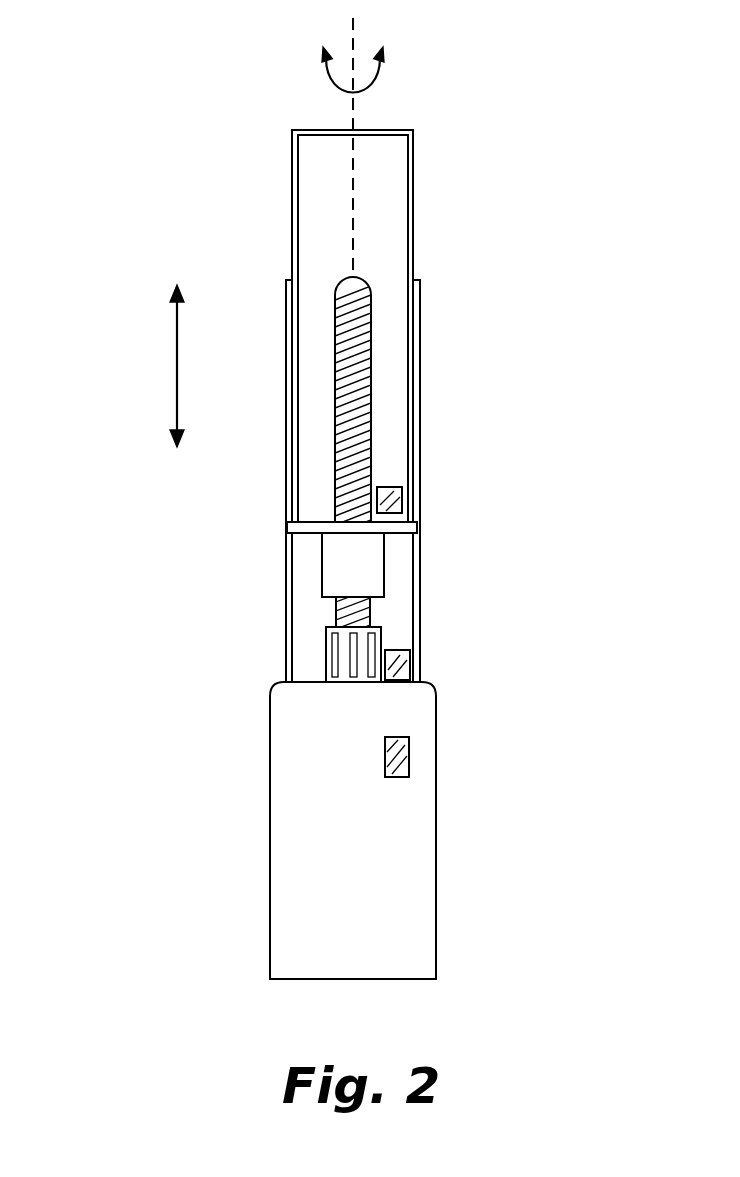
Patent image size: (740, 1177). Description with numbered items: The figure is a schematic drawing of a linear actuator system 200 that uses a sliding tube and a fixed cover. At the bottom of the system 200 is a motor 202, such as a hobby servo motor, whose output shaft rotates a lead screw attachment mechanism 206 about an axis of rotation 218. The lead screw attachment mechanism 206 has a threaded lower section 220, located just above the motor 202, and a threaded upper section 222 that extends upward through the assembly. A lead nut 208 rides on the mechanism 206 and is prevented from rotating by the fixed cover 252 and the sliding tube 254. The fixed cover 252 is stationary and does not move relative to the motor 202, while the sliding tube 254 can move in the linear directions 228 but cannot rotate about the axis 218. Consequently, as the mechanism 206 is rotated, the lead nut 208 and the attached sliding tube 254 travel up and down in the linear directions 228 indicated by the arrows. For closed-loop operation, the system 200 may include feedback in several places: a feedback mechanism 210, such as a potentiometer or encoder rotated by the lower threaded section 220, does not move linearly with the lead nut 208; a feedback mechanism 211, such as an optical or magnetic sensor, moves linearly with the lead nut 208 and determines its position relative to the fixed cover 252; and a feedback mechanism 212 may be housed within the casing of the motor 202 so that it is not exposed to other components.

The linear actuator system 200 is at (168, 1006).
The motor 202 is at (436, 865).
The lead screw attachment mechanism 206 is at (386, 328).
The lead nut 208 is at (378, 560).
The feedback mechanism 210 is at (410, 663).
The feedback mechanism 211 is at (402, 500).
The feedback mechanism 212 is at (409, 758).
The axis of rotation 218 is at (353, 28).
The threaded lower section 220 is at (326, 655).
The threaded upper section 222 is at (335, 342).
The linear directions 228 is at (177, 367).
The fixed cover 252 is at (420, 410).
The sliding tube 254 is at (413, 193).